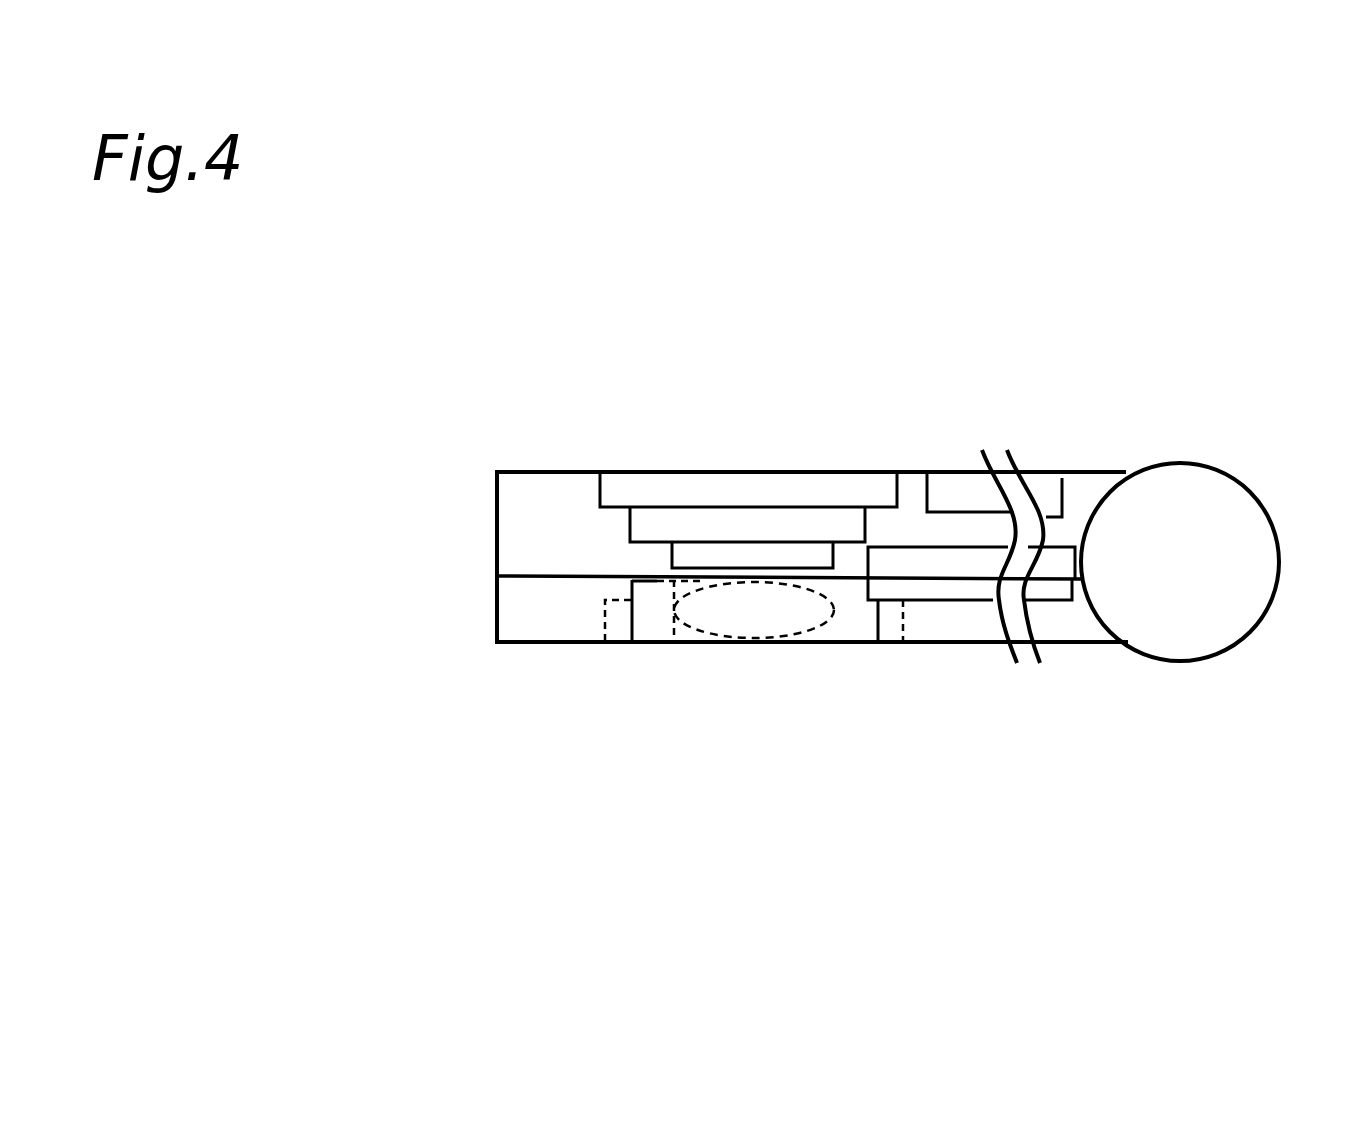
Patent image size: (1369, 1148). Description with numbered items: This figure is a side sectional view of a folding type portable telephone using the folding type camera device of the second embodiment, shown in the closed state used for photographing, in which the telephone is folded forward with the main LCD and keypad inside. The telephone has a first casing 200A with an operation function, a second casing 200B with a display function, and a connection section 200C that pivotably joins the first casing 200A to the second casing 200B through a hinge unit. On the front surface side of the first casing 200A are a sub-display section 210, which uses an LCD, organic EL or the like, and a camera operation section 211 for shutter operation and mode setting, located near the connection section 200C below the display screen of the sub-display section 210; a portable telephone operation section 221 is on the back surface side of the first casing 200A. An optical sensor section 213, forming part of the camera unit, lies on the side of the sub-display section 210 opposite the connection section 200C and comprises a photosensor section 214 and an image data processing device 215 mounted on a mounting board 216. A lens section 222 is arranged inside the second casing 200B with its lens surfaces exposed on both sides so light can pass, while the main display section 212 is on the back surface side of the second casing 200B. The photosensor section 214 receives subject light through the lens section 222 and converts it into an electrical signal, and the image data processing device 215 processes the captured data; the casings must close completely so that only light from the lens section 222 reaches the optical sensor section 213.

The first casing 200A is at (470, 505).
The second casing 200B is at (468, 616).
The connection section 200C is at (1185, 582).
The sub-display section 210 is at (955, 490).
The camera operation section 211 is at (1087, 488).
The main display section 212 is at (922, 583).
The optical sensor section 213 is at (674, 339).
The photosensor section 214 is at (779, 412).
The image data processing device 215 is at (667, 518).
The mounting board 216 is at (710, 493).
The portable telephone operation section 221 is at (1045, 563).
The lens section 222 is at (776, 663).